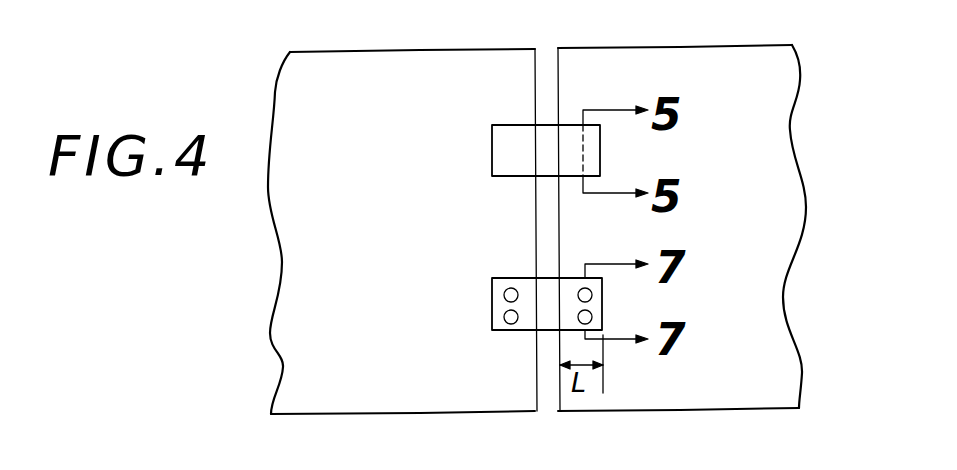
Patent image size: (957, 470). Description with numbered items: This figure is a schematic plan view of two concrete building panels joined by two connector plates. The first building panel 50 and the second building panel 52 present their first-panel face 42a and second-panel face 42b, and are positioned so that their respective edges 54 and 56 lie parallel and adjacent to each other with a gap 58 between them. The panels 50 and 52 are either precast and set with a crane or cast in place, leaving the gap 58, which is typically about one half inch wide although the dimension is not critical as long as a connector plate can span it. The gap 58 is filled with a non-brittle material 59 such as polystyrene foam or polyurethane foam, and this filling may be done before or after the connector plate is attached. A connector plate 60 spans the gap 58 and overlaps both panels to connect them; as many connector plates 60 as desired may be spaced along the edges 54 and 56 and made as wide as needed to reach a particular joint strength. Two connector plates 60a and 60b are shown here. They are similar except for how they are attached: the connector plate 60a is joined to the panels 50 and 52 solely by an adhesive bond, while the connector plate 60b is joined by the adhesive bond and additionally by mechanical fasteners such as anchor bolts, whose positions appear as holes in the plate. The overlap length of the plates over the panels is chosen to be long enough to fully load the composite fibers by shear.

The first-panel face 42a is at (305, 66).
The second-panel face 42b is at (770, 62).
The first building panel 50 is at (384, 75).
The second building panel 52 is at (665, 66).
The edge of the first building panel 54 is at (538, 95).
The edge of the second building panel 56 is at (555, 83).
The gap 58 is at (548, 232).
The non-brittle material 59 is at (548, 410).
The connector plate 60 is at (501, 212).
The connector plate 60a is at (492, 160).
The connector plate 60b is at (492, 310).